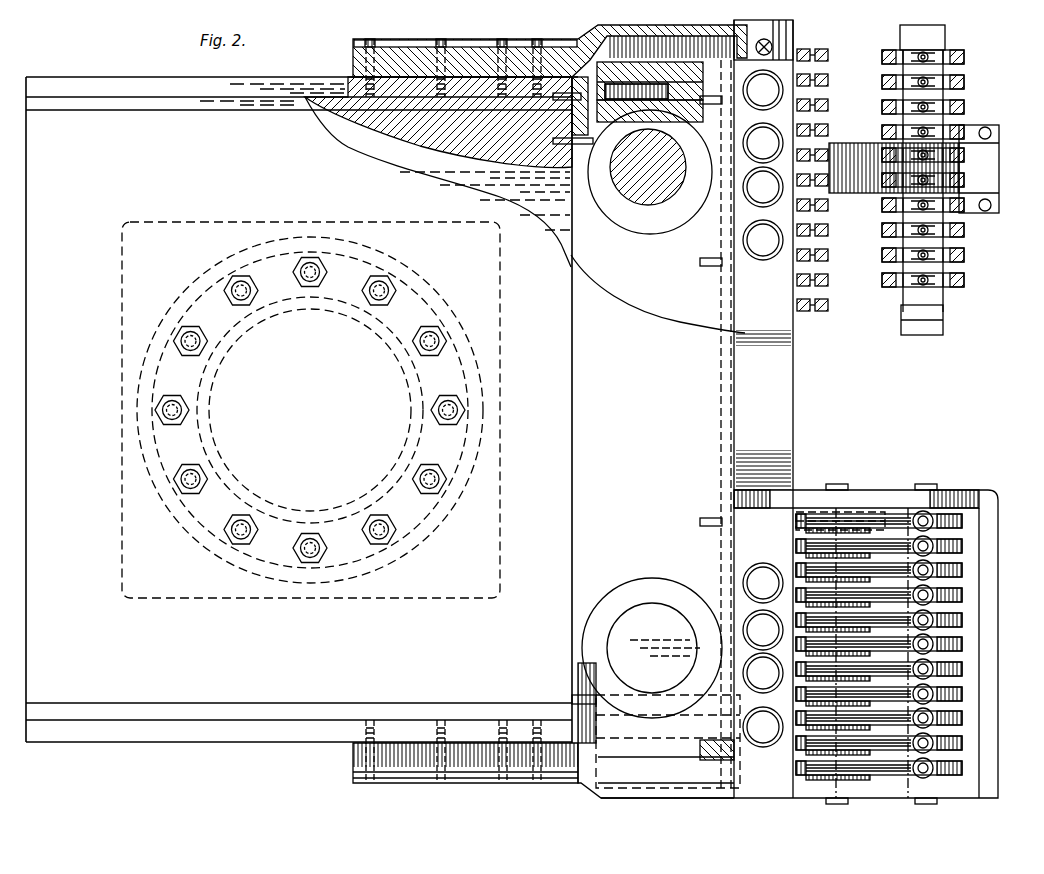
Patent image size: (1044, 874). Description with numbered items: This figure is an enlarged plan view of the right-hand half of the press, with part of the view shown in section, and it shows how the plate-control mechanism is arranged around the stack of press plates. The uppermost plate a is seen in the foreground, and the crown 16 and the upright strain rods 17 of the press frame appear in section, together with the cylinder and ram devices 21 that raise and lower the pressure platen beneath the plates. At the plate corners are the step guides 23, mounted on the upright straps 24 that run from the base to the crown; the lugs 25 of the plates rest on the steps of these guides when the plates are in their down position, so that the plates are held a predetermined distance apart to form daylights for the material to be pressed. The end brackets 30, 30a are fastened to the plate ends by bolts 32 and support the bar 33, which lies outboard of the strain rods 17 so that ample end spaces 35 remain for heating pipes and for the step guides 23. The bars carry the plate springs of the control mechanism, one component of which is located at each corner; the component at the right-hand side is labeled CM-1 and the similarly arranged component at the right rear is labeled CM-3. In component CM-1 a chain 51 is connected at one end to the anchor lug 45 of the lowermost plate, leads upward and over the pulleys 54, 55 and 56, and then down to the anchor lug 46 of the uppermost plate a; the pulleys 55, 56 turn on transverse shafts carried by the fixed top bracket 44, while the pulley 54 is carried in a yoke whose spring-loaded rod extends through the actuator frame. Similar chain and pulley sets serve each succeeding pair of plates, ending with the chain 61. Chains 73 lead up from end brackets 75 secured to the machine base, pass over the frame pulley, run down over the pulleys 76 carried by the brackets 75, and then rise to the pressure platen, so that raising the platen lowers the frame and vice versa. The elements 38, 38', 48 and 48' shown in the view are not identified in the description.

The uppermost plate a is at (140, 77).
The crown 16 is at (348, 150).
The upright strain rods 17 is at (640, 195).
The cylinder and ram devices 21 is at (160, 469).
The step guides 23 is at (689, 112).
The upright straps 24 is at (667, 62).
The lugs 25 is at (612, 124).
The end bracket 30 is at (590, 37).
The end bracket 30a is at (598, 786).
The bolts 32 is at (442, 39).
The bar 33 is at (760, 338).
The end spaces 35 is at (658, 294).
The roller 38 is at (761, 394).
The roller 38' is at (738, 408).
The fixed top bracket 44 is at (952, 490).
The anchor lug 45 is at (829, 55).
The anchor lug 46 is at (800, 70).
The roller 48 is at (723, 402).
The roller 48' is at (738, 411).
The chain 51 is at (964, 58).
The pulley 54 is at (948, 52).
The pulley 55 is at (962, 534).
The pulley 56 is at (862, 512).
The chain 61 is at (964, 306).
The chains 73 is at (999, 174).
The end brackets 75 is at (978, 212).
The pulleys 76 is at (845, 143).
The control mechanism component CM-1 is at (922, 474).
The control mechanism component CM-3 is at (957, 320).